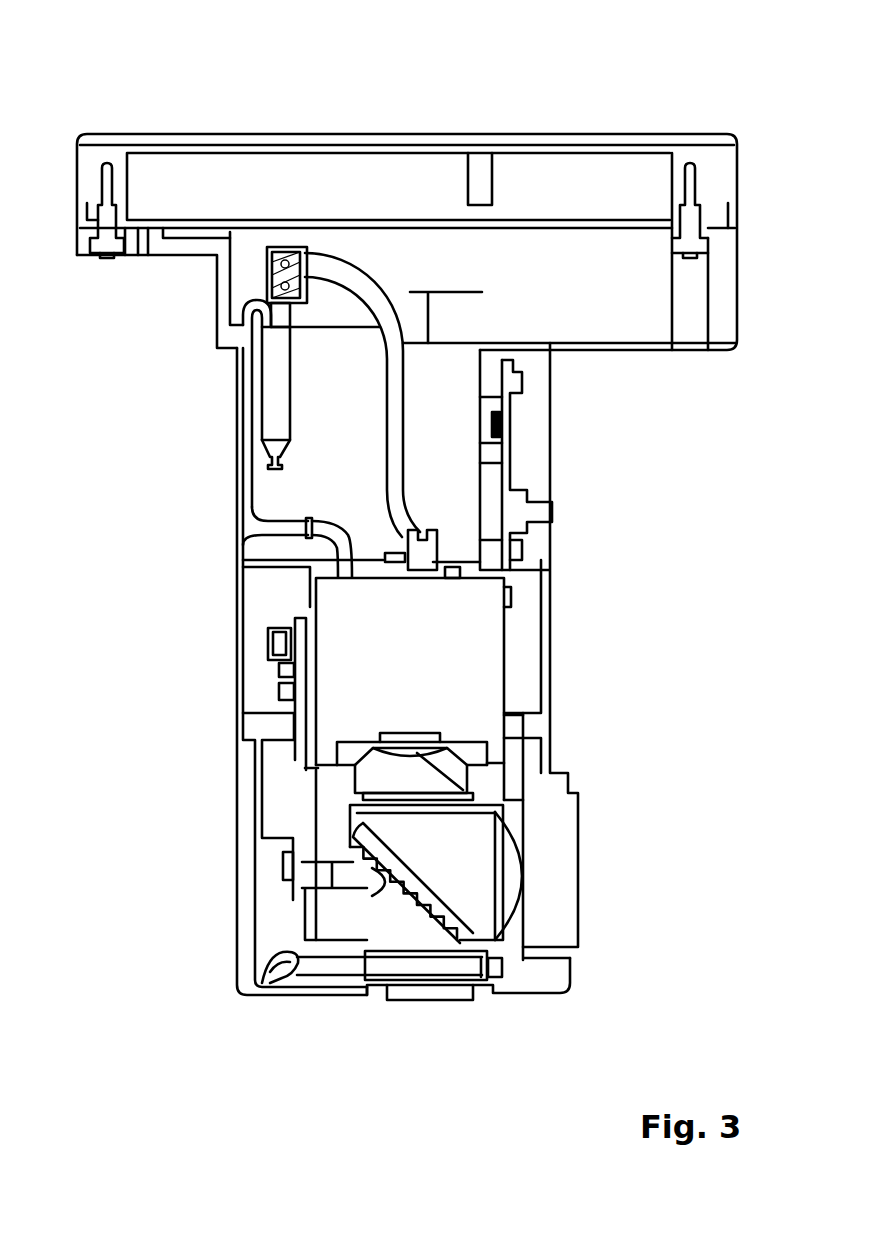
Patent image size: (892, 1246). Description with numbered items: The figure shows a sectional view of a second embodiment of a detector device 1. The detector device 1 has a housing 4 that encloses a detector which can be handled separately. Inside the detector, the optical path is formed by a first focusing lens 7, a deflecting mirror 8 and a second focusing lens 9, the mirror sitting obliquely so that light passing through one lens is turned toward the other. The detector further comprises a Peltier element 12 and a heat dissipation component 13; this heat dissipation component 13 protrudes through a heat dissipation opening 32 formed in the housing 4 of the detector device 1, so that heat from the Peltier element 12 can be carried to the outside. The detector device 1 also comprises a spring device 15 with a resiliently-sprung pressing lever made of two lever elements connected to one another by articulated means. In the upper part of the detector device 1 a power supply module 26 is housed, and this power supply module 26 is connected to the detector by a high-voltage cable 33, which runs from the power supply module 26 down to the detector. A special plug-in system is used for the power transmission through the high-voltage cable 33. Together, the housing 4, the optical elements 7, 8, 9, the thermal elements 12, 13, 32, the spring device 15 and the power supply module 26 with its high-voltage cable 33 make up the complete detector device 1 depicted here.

The detector device 1 is at (735, 80).
The housing 4 is at (247, 928).
The first focusing lens 7 is at (515, 878).
The deflecting mirror 8 is at (393, 882).
The second focusing lens 9 is at (503, 810).
The Peltier element 12 is at (577, 952).
The heat dissipation component 13 is at (423, 990).
The spring device 15 is at (340, 677).
The power supply module 26 is at (308, 488).
The heat dissipation opening 32 is at (373, 1010).
The high-voltage cable 33 is at (397, 418).